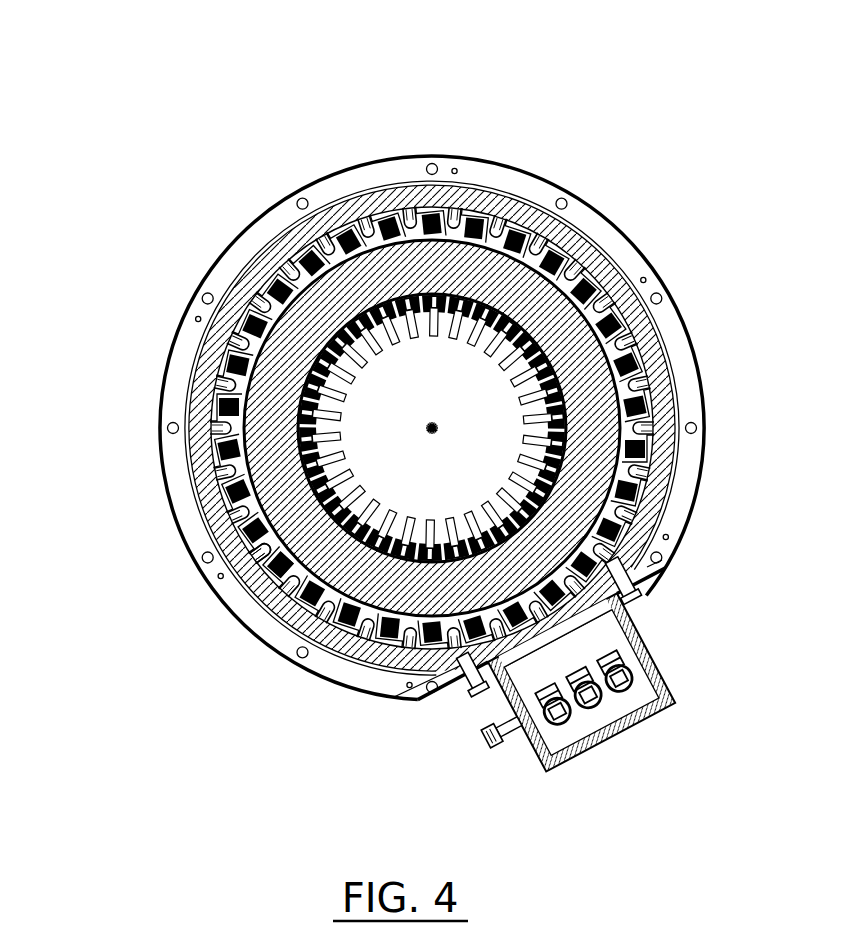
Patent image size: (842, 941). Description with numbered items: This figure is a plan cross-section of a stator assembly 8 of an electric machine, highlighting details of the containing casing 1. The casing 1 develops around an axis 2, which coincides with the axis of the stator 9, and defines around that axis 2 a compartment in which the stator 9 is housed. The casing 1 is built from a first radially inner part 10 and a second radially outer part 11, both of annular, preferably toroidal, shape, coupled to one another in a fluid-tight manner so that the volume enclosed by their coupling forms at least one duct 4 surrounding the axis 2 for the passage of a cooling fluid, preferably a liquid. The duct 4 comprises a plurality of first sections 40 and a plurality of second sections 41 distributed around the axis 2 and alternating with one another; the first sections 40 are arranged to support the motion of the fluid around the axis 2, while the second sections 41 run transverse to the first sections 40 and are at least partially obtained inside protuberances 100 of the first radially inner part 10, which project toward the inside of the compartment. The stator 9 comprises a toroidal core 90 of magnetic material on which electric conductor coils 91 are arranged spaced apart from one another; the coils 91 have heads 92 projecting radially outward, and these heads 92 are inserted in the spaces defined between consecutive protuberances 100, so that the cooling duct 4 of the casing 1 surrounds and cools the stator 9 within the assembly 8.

The containing casing 1 is at (267, 248).
The axis 2 is at (434, 426).
The duct 4 is at (580, 262).
The stator assembly 8 is at (215, 126).
The stator 9 is at (447, 293).
The first radially inner part 10 is at (547, 238).
The second radially outer part 11 is at (505, 207).
The first sections 40 is at (390, 208).
The second sections 41 is at (368, 230).
The toroidal core 90 is at (277, 360).
The electric conductor coils 91 is at (344, 412).
The heads 92 is at (243, 505).
The protuberances 100 is at (265, 570).